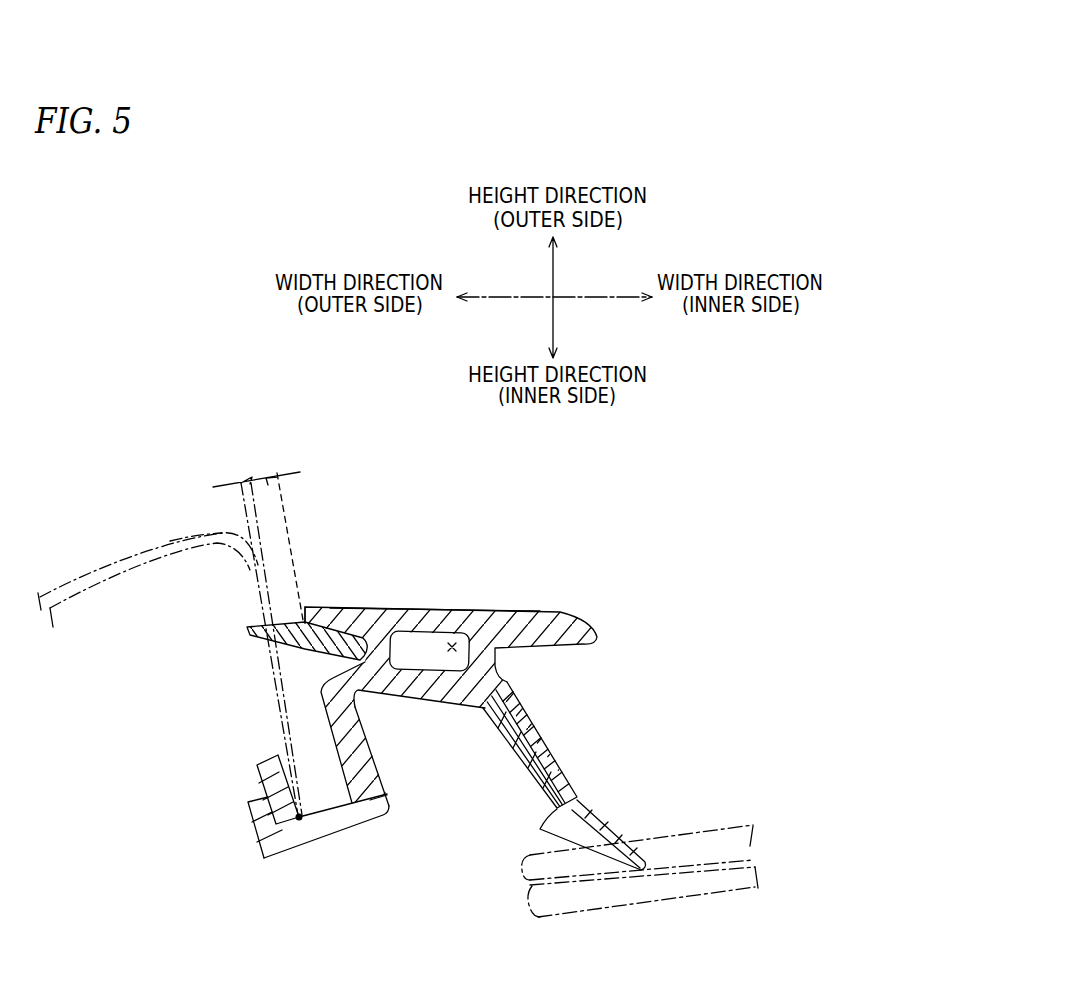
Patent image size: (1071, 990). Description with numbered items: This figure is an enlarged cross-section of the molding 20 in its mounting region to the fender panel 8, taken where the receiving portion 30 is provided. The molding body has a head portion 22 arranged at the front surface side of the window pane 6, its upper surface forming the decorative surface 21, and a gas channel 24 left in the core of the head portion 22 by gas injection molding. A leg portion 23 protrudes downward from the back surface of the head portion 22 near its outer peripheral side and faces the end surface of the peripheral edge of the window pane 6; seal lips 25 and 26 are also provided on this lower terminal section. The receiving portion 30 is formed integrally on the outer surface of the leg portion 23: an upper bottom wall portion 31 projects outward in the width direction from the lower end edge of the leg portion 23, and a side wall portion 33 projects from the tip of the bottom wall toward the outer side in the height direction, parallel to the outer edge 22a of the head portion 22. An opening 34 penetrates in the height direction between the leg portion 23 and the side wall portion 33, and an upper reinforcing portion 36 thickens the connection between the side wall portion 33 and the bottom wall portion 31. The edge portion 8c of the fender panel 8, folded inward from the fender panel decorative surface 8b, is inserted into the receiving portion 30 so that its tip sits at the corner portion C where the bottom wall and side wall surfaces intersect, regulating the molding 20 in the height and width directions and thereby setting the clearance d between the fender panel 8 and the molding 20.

The fender panel 8 is at (120, 560).
The fender panel decorative surface 8b is at (172, 540).
The edge portion 8c is at (262, 680).
The molding 20 is at (436, 710).
The decorative surface 21 is at (428, 605).
The head portion 22 is at (378, 612).
The outer edge 22a is at (304, 628).
The leg portion 23 is at (357, 738).
The gas channel 24 is at (454, 645).
The seal lip 25 is at (257, 625).
The seal lip 26 is at (597, 822).
The window pane 6 is at (692, 823).
The receiving portion 30 is at (237, 809).
The upper bottom wall portion 31 is at (330, 826).
The side wall portion 33 is at (278, 817).
The opening 34 is at (353, 828).
The upper reinforcing portion 36 is at (257, 837).
The corner portion C is at (298, 821).
The clearance d is at (258, 537).